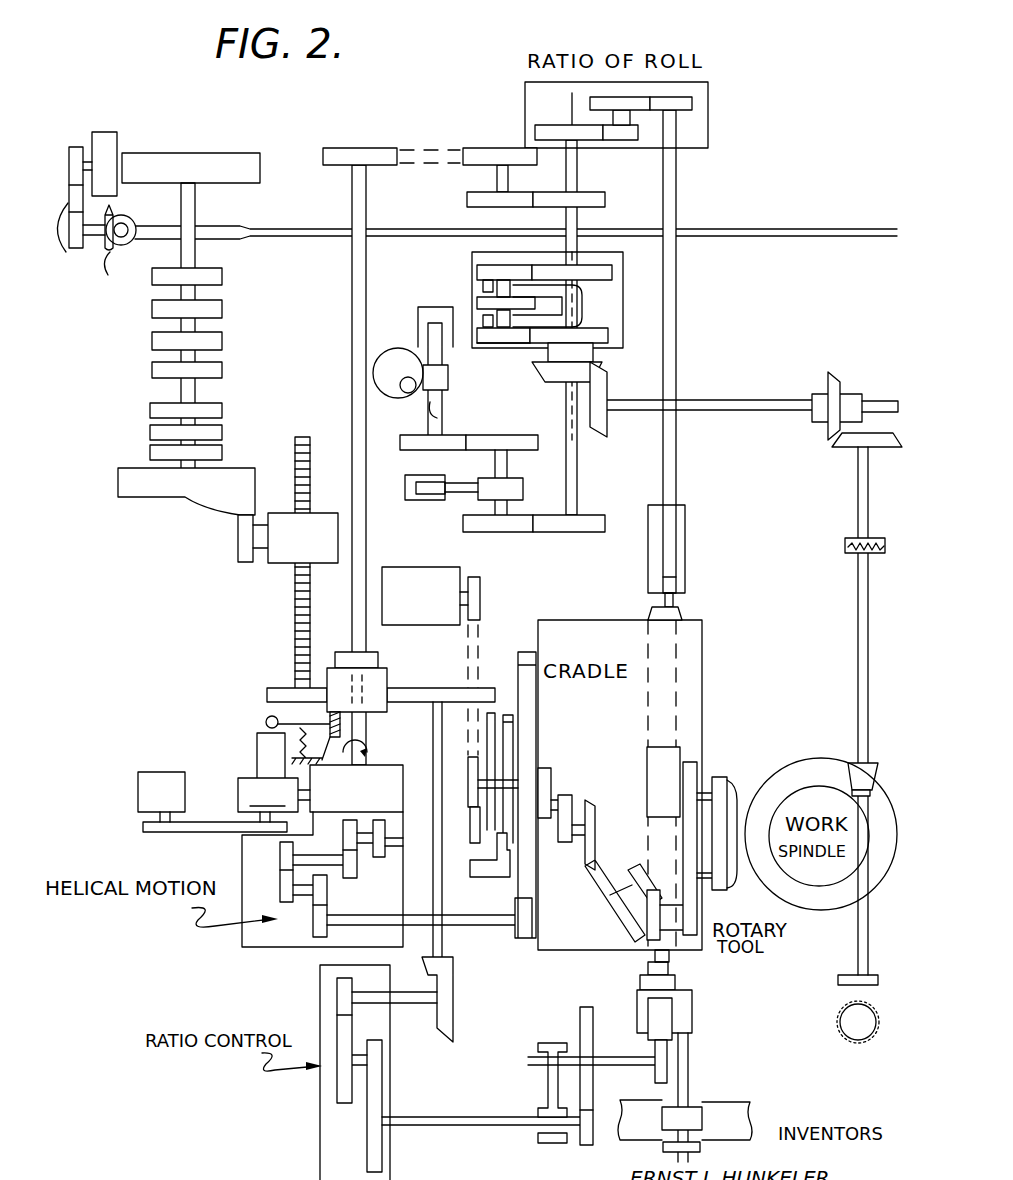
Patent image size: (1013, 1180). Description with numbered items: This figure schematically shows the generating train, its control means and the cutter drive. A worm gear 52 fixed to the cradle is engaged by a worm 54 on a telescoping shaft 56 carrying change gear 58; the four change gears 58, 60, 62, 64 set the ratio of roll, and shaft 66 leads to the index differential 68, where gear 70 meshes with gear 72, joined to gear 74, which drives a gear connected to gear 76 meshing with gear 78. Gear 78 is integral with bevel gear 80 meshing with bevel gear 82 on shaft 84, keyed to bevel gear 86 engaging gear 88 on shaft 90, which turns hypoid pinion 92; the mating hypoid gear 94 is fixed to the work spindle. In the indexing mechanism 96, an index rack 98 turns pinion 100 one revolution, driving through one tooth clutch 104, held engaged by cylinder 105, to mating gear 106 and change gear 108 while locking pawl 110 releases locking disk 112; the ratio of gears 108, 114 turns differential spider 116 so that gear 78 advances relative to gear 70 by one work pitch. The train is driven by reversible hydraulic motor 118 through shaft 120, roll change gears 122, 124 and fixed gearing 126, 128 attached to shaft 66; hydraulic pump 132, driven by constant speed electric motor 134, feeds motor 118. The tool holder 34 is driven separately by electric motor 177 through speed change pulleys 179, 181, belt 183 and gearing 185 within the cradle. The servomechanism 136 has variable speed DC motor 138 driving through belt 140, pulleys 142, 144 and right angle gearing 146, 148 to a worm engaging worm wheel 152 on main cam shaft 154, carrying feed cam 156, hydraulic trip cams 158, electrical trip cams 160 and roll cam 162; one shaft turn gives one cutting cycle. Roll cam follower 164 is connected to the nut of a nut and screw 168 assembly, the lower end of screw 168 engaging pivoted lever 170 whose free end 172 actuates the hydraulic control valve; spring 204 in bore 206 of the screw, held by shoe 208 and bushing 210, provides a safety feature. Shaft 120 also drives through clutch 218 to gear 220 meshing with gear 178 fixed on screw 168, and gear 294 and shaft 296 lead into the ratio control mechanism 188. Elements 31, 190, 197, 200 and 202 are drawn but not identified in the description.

The rotary tool spindle 31 is at (752, 778).
The tool holder 34 is at (700, 775).
The worm gear 52 is at (680, 613).
The worm 54 is at (690, 745).
The telescoping shaft 56 is at (677, 188).
The change gear 58 is at (692, 106).
The change gear 60 is at (650, 98).
The change gear 62 is at (618, 142).
The change gear 64 is at (540, 125).
The shaft 66 is at (565, 183).
The index differential gearing 68 is at (648, 299).
The gear 70 is at (598, 265).
The gear 72 is at (487, 265).
The gear 74 is at (478, 298).
The gear 76 is at (486, 346).
The gear 78 is at (610, 340).
The bevel gear 80 is at (553, 376).
The bevel gear 82 is at (607, 388).
The shaft 84 is at (757, 380).
The bevel gear 86 is at (838, 376).
The mating gear 88 is at (850, 440).
The shaft 90 is at (858, 603).
The pinion 92 is at (846, 774).
The hypoid gear 94 is at (773, 888).
The indexing mechanism 96 is at (398, 410).
The index rack 98 is at (400, 352).
The pinion 100 is at (448, 380).
The one tooth clutch 104 is at (445, 420).
The cylinder 105 is at (450, 307).
The mating gear 106 is at (530, 430).
The change gear 108 is at (495, 532).
The locking pawl 110 is at (478, 480).
The locking disk 112 is at (522, 486).
The gear 114 is at (563, 532).
The differential spider 116 is at (583, 308).
The reversible hydraulic motor 118 is at (394, 765).
The shaft 120 is at (367, 198).
The roll change gear 122 is at (359, 148).
The roll change gear 124 is at (484, 140).
The fixed gear 126 is at (467, 200).
The fixed gear 128 is at (605, 200).
The hydraulic pump 132 is at (268, 795).
The motor 134 is at (181, 772).
The servomechanism 136 is at (175, 555).
The variable speed DC motor 138 is at (113, 141).
The belt 140 is at (64, 251).
The pulley 142 is at (77, 145).
The pulley 144 is at (104, 252).
The right angle gear 146 is at (110, 275).
The right angle gear 148 is at (130, 218).
The worm wheel 152 is at (243, 227).
The main cam shaft 154 is at (188, 255).
The feed cam 156 is at (222, 152).
The hydraulic trip cams 158 is at (232, 263).
The electrical trip cams 160 is at (150, 403).
The roll cam 162 is at (143, 500).
The roll cam follower roller 164 is at (238, 554).
The screw 168 is at (302, 436).
The pivoted lever 170 is at (350, 788).
The free end 172 is at (265, 722).
The electric motor 177 is at (402, 568).
The gear 178 is at (275, 687).
The speed change pulley 179 is at (481, 580).
The speed change pulley 181 is at (465, 800).
The belt 183 is at (480, 648).
The train of gearing 185 is at (592, 788).
The ratio control mechanism 188 is at (262, 1090).
The cradle housing 190 is at (517, 890).
The bracket 197 is at (497, 822).
The bevel gear 200 is at (450, 964).
The gear 202 is at (315, 1022).
The spring 204 is at (597, 1132).
The bore 206 is at (667, 1080).
The shoe 208 is at (666, 1026).
The bushing 210 is at (690, 994).
The clutch 218 is at (388, 660).
The gear 220 is at (332, 652).
The gear 294 is at (448, 675).
The shaft 296 is at (436, 712).